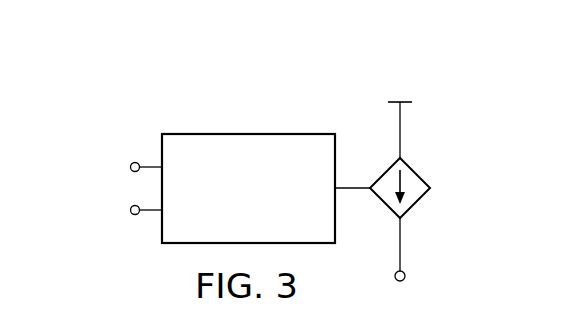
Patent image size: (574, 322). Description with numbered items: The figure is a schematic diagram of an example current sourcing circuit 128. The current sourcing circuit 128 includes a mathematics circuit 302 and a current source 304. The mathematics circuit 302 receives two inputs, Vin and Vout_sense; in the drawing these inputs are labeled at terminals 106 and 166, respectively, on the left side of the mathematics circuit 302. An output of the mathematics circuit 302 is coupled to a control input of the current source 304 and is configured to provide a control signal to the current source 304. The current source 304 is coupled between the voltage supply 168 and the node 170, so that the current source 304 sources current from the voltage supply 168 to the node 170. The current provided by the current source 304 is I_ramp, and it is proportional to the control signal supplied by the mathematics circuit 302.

The current sourcing circuit 128 is at (178, 56).
The mathematics circuit 302 is at (248, 132).
The input voltage node (Vin) 106 is at (134, 162).
The output voltage sense node (Vout_sense) 166 is at (134, 215).
The voltage supply 168 is at (404, 100).
The current source 304 is at (438, 155).
The node 170 is at (405, 278).